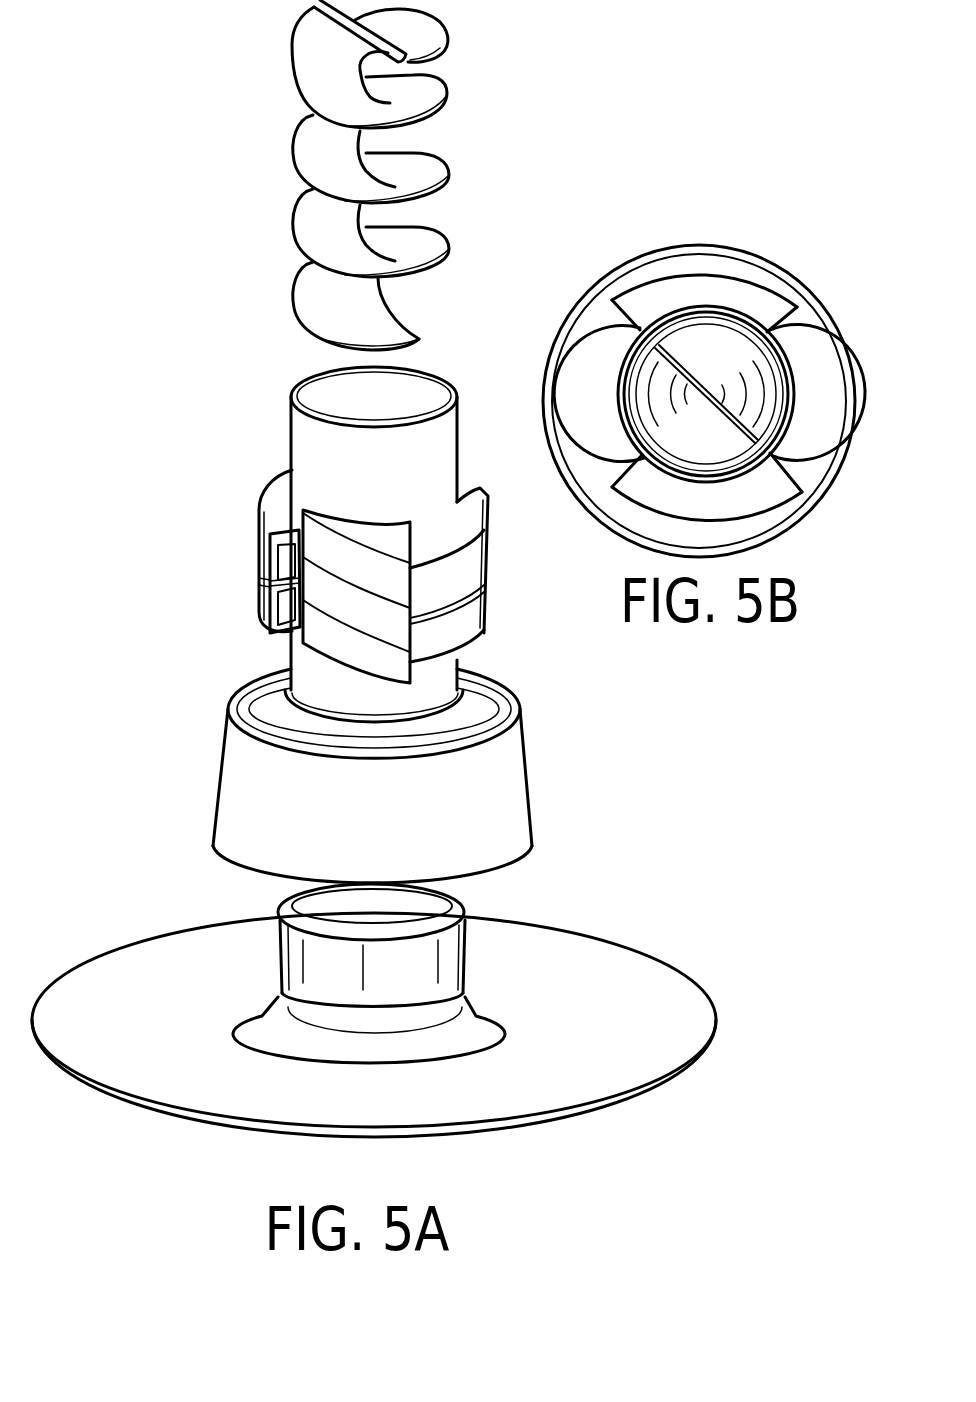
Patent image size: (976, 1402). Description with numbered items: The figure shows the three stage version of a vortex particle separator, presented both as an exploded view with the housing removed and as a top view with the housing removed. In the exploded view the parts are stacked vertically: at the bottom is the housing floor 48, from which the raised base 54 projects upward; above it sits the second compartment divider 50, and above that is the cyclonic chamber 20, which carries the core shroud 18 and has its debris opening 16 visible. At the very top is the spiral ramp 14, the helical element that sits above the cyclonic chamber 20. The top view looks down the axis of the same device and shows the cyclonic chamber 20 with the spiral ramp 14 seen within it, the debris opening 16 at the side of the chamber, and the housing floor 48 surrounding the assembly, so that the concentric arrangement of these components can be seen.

In FIG. 5A, the spiral ramp 14 is at (444, 97).
In FIG. 5B, the spiral ramp 14 is at (725, 368).
In FIG. 5A, the debris opening 16 is at (263, 560).
In FIG. 5B, the debris opening 16 is at (780, 503).
In FIG. 5A, the core shroud 18 is at (302, 431).
In FIG. 5A, the cyclonic chamber 20 is at (230, 452).
In FIG. 5B, the cyclonic chamber 20 is at (697, 318).
In FIG. 5A, the housing floor 48 is at (690, 1033).
In FIG. 5A, the second compartment divider 50 is at (530, 749).
In FIG. 5B, the second compartment divider 50 is at (593, 316).
In FIG. 5A, the raised base 54 is at (463, 953).